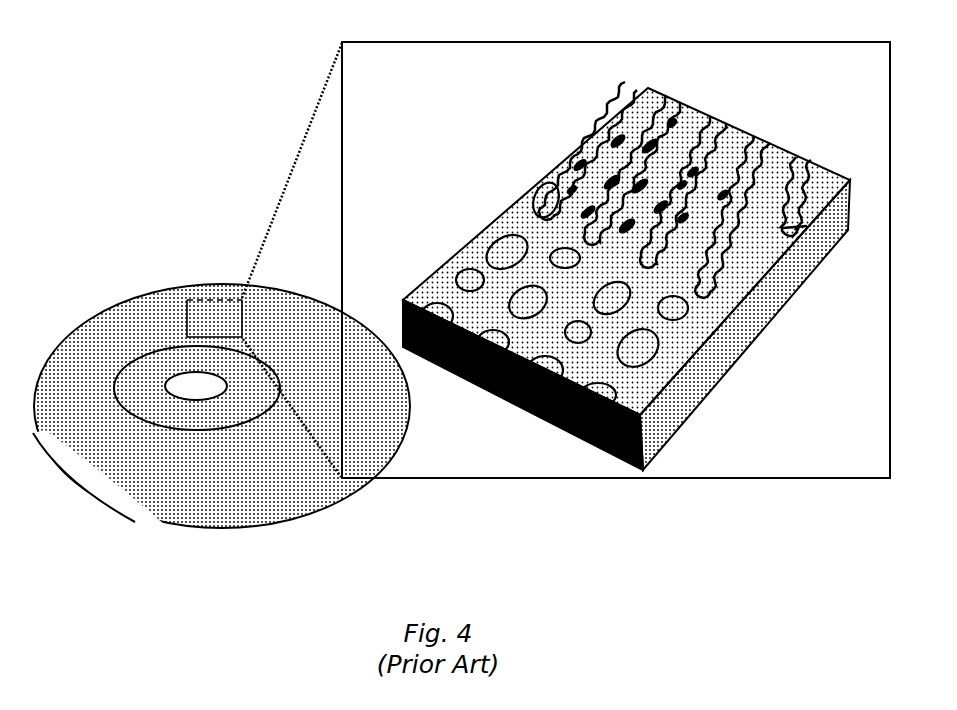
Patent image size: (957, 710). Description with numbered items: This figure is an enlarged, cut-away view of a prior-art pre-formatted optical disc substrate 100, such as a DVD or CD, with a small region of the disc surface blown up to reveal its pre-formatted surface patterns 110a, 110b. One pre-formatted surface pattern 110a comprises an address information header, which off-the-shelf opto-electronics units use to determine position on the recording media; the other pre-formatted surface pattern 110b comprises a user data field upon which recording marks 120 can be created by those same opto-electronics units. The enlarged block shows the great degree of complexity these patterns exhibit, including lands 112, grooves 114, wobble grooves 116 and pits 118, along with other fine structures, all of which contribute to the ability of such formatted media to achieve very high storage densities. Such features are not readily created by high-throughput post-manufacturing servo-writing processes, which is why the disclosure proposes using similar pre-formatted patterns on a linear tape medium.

The pre-formatted optical disc substrate 100 is at (106, 283).
The pre-formatted surface pattern (address information header) 110a is at (493, 203).
The pre-formatted surface pattern (user data field) 110b is at (623, 80).
The lands 112 is at (727, 130).
The grooves 114 is at (838, 241).
The wobble grooves 116 is at (803, 163).
The pits 118 is at (555, 410).
The recording marks 120 is at (655, 110).